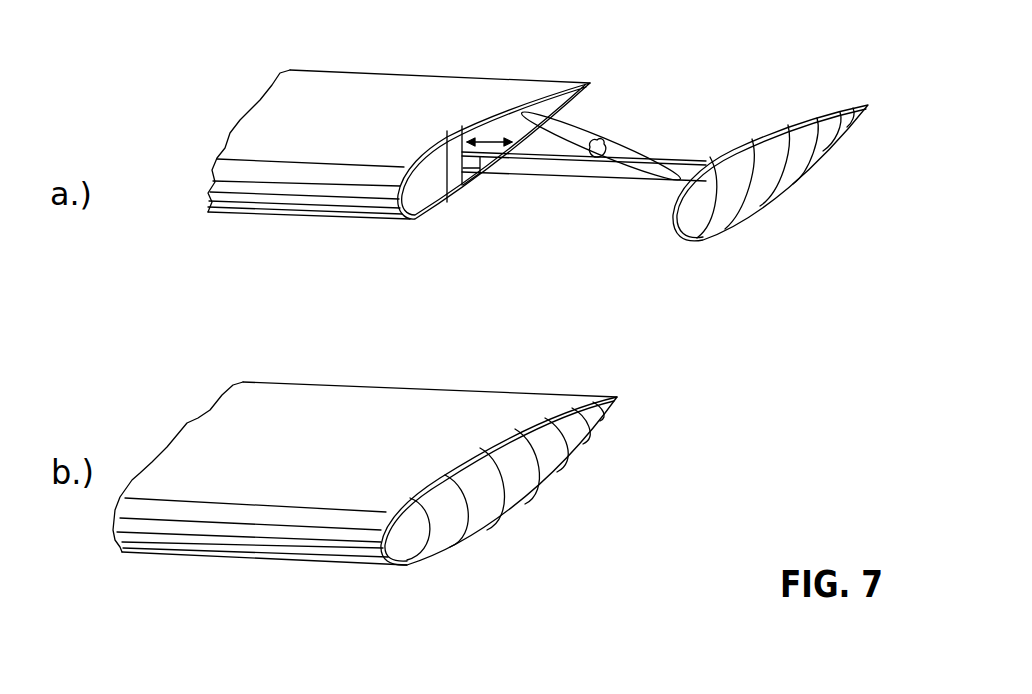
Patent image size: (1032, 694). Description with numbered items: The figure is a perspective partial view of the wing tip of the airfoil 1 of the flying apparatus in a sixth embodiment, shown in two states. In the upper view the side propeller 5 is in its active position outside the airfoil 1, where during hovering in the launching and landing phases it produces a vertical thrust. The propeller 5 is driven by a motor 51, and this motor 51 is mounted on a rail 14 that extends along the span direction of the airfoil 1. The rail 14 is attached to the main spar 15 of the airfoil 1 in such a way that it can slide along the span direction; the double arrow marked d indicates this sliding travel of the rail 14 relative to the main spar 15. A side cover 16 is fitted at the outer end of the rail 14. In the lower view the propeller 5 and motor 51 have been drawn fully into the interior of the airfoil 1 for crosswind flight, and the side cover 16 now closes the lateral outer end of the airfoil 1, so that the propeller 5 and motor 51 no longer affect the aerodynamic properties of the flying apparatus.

The airfoil 1 is at (382, 94).
The side propeller 5 is at (635, 157).
The rail 14 is at (541, 166).
The main spar 15 is at (435, 186).
The side cover 16 is at (823, 158).
The motor 51 is at (593, 158).
The distance d is at (494, 138).